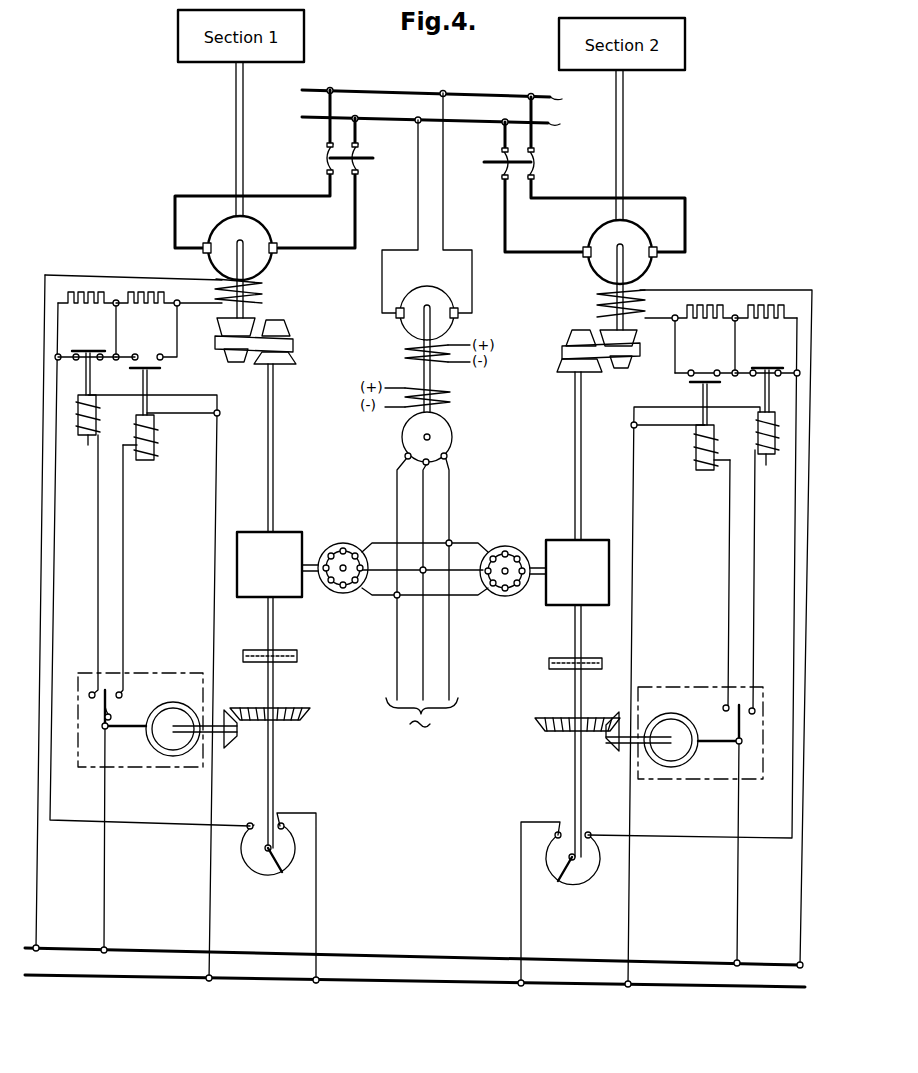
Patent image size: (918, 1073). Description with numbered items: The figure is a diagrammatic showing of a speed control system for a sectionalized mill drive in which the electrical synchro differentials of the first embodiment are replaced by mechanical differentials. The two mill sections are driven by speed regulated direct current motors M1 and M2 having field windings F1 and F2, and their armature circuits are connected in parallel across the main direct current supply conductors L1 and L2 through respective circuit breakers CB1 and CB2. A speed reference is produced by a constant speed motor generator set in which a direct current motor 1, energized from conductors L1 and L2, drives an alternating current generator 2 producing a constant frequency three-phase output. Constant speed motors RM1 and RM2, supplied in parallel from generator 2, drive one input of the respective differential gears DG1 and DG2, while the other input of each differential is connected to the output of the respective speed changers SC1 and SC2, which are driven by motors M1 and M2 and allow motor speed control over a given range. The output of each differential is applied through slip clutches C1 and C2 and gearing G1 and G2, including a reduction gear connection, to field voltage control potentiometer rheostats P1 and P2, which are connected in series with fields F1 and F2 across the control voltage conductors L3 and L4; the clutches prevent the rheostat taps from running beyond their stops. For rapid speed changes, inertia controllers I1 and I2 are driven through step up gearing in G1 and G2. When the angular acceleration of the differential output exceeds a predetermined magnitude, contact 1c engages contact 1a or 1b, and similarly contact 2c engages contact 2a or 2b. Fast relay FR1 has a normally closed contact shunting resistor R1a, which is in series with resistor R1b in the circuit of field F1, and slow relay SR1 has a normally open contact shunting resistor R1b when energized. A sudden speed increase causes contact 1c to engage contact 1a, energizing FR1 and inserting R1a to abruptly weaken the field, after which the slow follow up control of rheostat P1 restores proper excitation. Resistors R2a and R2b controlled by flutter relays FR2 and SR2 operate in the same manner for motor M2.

The main supply conductor L1 is at (444, 98).
The main supply conductor L2 is at (444, 124).
The control voltage conductor L3 is at (778, 965).
The control voltage conductor L4 is at (778, 990).
The circuit breaker CB1 is at (358, 155).
The circuit breaker CB2 is at (500, 178).
The direct current motor M1 is at (280, 218).
The direct current motor M2 is at (598, 225).
The field winding F1 is at (262, 290).
The field winding F2 is at (596, 300).
The speed changer SC1 is at (296, 348).
The speed changer SC2 is at (566, 336).
The direct current motor 1 is at (446, 305).
The alternating current generator 2 is at (452, 437).
The constant speed motor RM1 is at (355, 537).
The constant speed motor RM2 is at (516, 540).
The differential gear DG1 is at (296, 535).
The differential gear DG2 is at (562, 532).
The slip clutch C1 is at (282, 650).
The slip clutch C2 is at (547, 661).
The gearing G1 is at (296, 708).
The gearing G2 is at (596, 718).
The potentiometer rheostat P1 is at (257, 882).
The potentiometer rheostat P2 is at (586, 884).
The resistor R1a is at (88, 326).
The resistor R1b is at (148, 326).
The resistor R2a is at (767, 340).
The resistor R2b is at (705, 340).
The fast relay FR1 is at (86, 406).
The slow relay SR1 is at (143, 425).
The slow relay SR2 is at (708, 437).
The fast relay FR2 is at (770, 425).
The inertia controller I1 is at (184, 666).
The inertia controller I2 is at (690, 680).
The contact 1a is at (88, 688).
The contact 1b is at (111, 720).
The contact 1c is at (116, 682).
The contact 2a is at (755, 708).
The contact 2b is at (720, 724).
The contact 2c is at (729, 701).